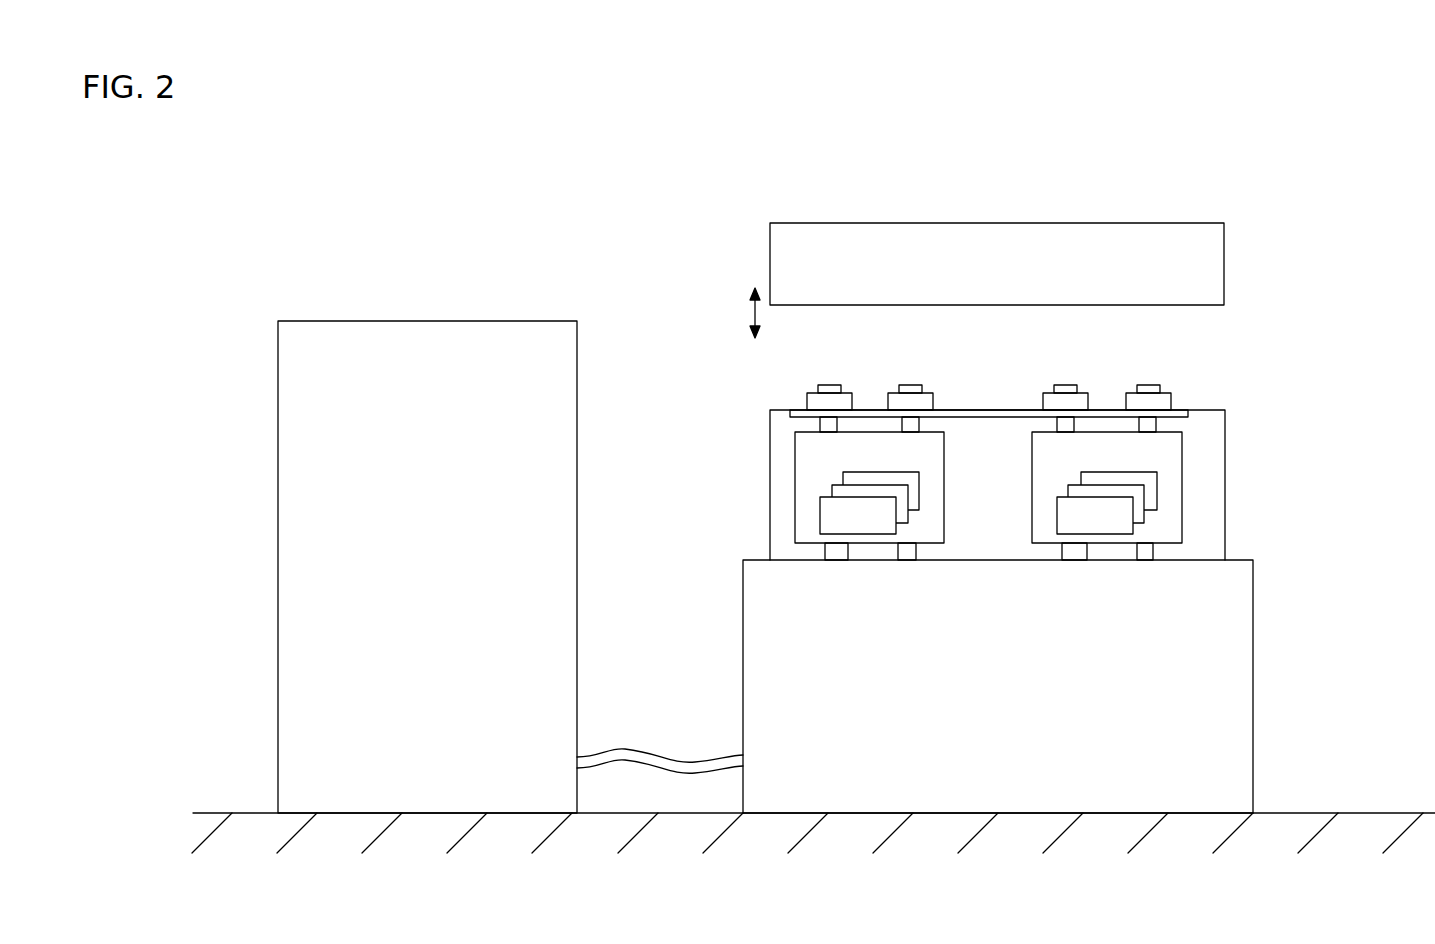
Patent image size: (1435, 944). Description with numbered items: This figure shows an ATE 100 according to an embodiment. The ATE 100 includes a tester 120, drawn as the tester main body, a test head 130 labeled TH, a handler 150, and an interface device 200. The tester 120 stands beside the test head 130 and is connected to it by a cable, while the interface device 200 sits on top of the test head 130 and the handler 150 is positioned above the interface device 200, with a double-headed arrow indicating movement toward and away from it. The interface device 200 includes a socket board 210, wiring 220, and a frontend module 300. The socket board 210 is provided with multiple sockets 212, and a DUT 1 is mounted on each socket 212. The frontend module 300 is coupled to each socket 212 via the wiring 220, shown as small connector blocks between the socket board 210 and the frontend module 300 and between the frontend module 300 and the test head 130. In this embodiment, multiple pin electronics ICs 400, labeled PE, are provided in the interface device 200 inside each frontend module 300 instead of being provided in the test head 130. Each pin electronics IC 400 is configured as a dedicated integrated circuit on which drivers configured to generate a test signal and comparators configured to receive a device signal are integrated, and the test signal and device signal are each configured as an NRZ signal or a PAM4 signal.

The ATE 100 is at (1383, 189).
The tester 120 is at (503, 320).
The test head 130 is at (1254, 668).
The handler 150 is at (1225, 262).
The interface device 200 is at (1255, 386).
The socket board 210 is at (1182, 410).
The socket 212 is at (1086, 400).
The wiring 220 is at (818, 424).
The frontend module 300 is at (795, 486).
The pin electronics IC 400 is at (852, 497).
The DUT 1 is at (828, 385).